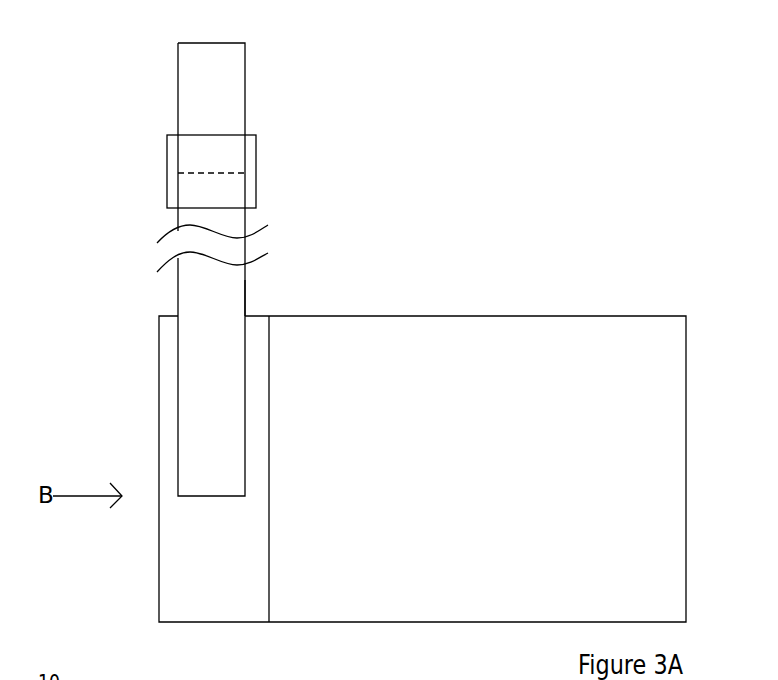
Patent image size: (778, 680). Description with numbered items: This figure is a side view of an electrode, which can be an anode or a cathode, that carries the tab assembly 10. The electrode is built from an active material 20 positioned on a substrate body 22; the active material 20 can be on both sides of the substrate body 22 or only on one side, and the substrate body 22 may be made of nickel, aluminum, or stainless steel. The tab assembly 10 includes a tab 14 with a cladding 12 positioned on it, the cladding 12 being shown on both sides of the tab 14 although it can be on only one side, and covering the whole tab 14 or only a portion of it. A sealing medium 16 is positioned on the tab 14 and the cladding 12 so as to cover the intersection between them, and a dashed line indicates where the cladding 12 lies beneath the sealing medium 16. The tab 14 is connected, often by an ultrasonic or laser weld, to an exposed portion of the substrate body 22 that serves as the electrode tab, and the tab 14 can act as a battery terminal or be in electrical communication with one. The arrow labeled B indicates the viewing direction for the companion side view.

The tab assembly 10 is at (138, 93).
The cladding 12 is at (245, 89).
The tab 14 is at (245, 293).
The sealing medium 16 is at (167, 172).
The active material 20 is at (388, 348).
The substrate body 22 is at (183, 622).